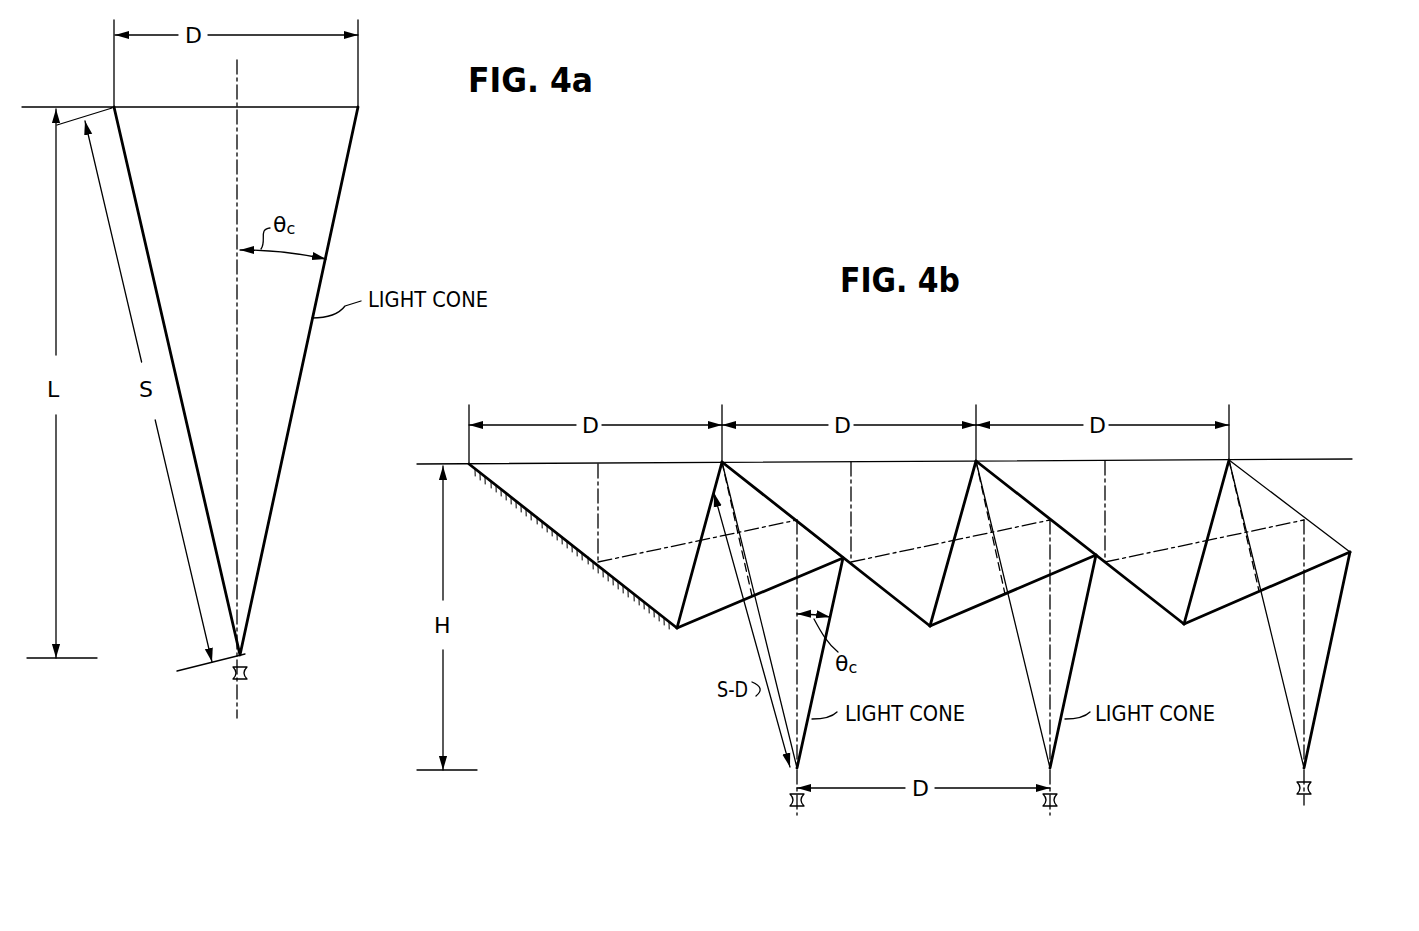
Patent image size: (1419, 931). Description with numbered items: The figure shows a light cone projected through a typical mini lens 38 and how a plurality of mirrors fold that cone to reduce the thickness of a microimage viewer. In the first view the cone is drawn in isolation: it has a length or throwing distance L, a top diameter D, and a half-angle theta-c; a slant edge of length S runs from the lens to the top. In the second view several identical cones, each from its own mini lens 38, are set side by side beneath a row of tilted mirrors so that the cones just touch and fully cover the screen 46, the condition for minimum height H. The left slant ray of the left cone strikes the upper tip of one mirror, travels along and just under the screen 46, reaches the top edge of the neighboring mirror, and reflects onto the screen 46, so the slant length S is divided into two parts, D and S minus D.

In FIG. 4A, the mini lens 38 is at (247, 680).
In FIG. 4B, the mini lens 38 is at (795, 808).
In FIG. 4B, the screen 46 is at (1284, 458).